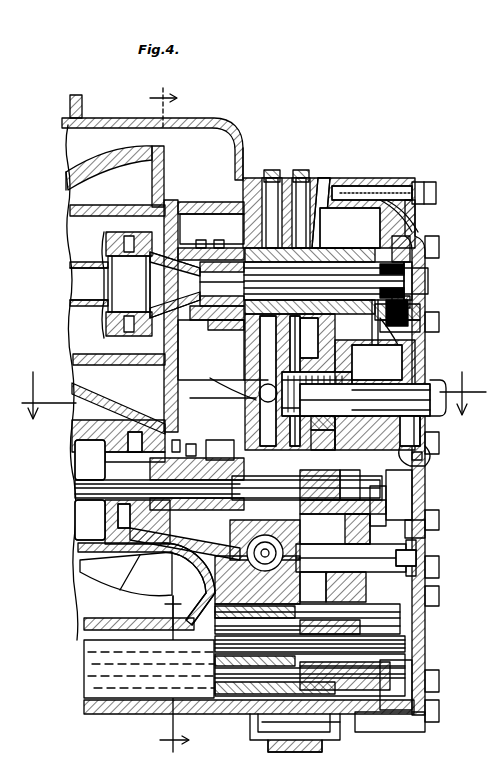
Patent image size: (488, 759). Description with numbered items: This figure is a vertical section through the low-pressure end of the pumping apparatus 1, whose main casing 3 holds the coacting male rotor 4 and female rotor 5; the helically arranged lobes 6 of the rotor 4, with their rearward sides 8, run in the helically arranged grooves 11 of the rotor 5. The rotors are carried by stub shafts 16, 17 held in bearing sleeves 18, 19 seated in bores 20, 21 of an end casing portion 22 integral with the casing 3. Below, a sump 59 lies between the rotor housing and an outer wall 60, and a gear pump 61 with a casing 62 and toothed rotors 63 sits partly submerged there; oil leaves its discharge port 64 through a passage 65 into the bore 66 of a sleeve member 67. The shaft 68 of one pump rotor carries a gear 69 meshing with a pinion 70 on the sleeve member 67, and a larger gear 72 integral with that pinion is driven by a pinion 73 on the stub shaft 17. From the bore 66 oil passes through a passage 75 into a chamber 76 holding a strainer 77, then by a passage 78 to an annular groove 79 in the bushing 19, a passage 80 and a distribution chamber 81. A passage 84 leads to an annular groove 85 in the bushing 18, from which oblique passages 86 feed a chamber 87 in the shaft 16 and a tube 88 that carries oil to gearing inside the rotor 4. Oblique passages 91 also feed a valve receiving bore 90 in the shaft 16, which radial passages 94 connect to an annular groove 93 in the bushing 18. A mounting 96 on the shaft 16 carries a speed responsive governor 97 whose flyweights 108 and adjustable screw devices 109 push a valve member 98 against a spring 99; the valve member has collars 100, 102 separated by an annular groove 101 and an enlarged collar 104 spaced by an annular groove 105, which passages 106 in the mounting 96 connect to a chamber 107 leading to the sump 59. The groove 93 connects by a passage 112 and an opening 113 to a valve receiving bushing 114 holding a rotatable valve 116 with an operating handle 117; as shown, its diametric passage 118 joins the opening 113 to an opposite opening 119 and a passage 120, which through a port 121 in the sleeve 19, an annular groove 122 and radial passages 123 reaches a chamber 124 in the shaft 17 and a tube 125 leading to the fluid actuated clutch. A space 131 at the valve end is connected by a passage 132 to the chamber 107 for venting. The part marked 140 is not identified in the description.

The pumping apparatus 1 is at (218, 120).
The main casing 3 is at (70, 112).
The male rotor 4 is at (70, 178).
The female rotor 5 is at (300, 340).
The helically arranged lobes 6 is at (112, 154).
The rearward sides 8 is at (166, 420).
The helically arranged grooves 11 is at (126, 578).
The stub shaft 16 is at (184, 246).
The stub shaft 17 is at (186, 452).
The bearing sleeve 18 is at (204, 233).
The bearing sleeve 19 is at (202, 450).
The bore 20 is at (220, 233).
The bore 21 is at (224, 450).
The end casing portion 22 is at (244, 150).
The sump 59 is at (92, 644).
The outer wall 60 is at (90, 706).
The pump 61 is at (173, 610).
The pump casing 62 is at (252, 722).
The pump rotors 63 is at (180, 638).
The discharge port 64 is at (400, 624).
The passage 65 is at (372, 598).
The bore 66 is at (380, 556).
The sleeve member 67 is at (418, 570).
The shaft 68 is at (410, 650).
The gear 69 is at (414, 688).
The pinion 70 is at (426, 528).
The larger gear 72 is at (386, 504).
The pinion 73 is at (412, 500).
The passage 75 is at (222, 600).
The chamber 76 is at (224, 580).
The strainer 77 is at (248, 550).
The passage 78 is at (320, 530).
The annular groove 79 is at (204, 516).
The passage 80 is at (223, 391).
The chamber 81 is at (256, 380).
The passage 84 is at (256, 360).
The annular groove 85 is at (272, 178).
The obliquely disposed passages 86 is at (246, 300).
The chamber 87 is at (155, 250).
The tube 88 is at (72, 276).
The valve receiving bore 90 is at (340, 212).
The obliquely extending passages 91 is at (300, 178).
The annular groove 93 is at (318, 200).
The radial passages 94 is at (318, 334).
The mounting 96 is at (340, 250).
The speed responsive governor 97 is at (410, 246).
The valve member 98 is at (405, 276).
The spring 99 is at (222, 272).
The collar 100 is at (240, 205).
The annular groove 101 is at (217, 324).
The collar 102 is at (335, 337).
The enlarged collar 104 is at (408, 281).
The annular groove 105 is at (420, 312).
The passages 106 is at (386, 186).
The chamber 107 is at (394, 364).
The flyweights 108 is at (400, 222).
The adjustable screw devices 109 is at (414, 240).
The passage 112 is at (314, 350).
The opening 113 is at (330, 362).
The valve receiving bushing 114 is at (400, 378).
The rotatable valve 116 is at (440, 412).
The operating handle 117 is at (426, 440).
The diametric passage 118 is at (330, 418).
The opening 119 is at (332, 440).
The passage 120 is at (223, 384).
The port 121 is at (344, 484).
The annular groove 122 is at (356, 490).
The radial passages 123 is at (210, 482).
The chamber 124 is at (340, 506).
The tube 125 is at (78, 486).
The space 131 is at (424, 436).
The passage 132 is at (430, 456).
The ring 140 is at (420, 328).